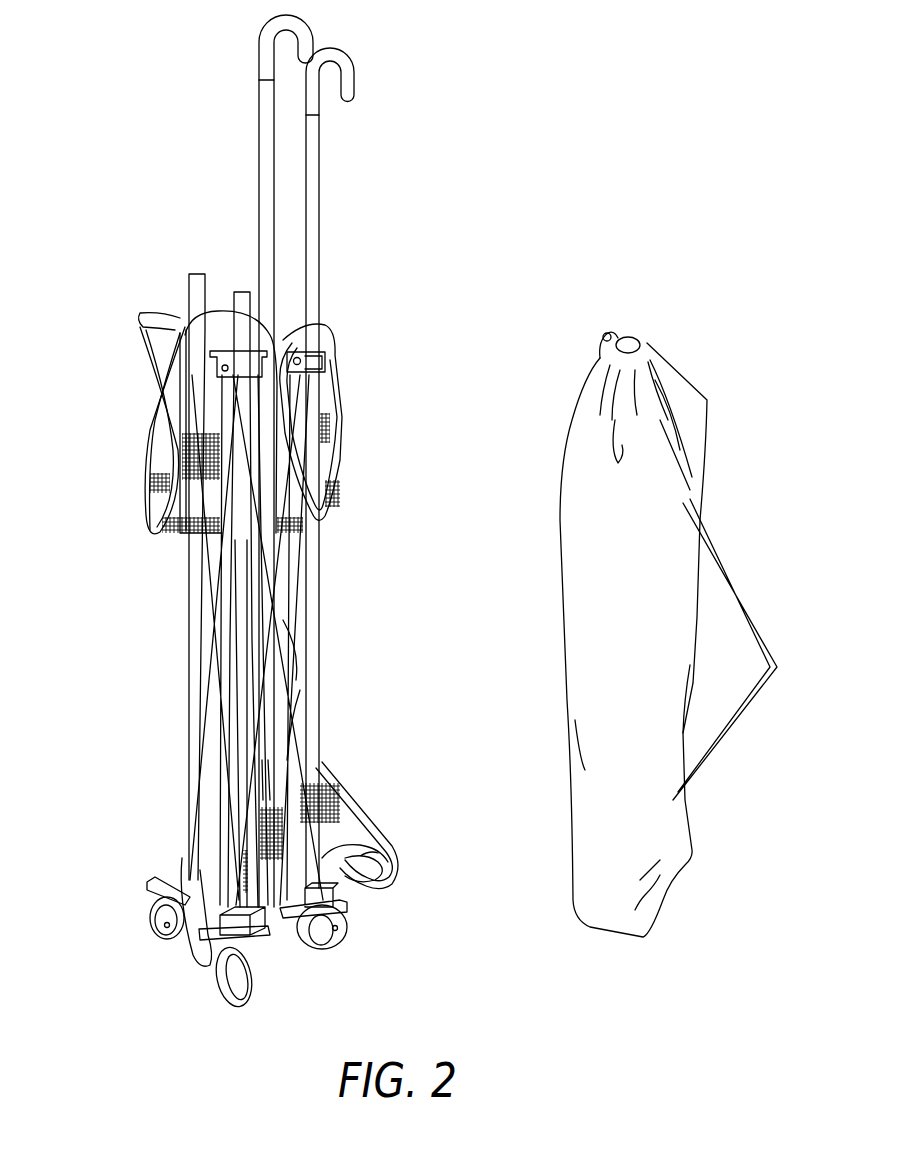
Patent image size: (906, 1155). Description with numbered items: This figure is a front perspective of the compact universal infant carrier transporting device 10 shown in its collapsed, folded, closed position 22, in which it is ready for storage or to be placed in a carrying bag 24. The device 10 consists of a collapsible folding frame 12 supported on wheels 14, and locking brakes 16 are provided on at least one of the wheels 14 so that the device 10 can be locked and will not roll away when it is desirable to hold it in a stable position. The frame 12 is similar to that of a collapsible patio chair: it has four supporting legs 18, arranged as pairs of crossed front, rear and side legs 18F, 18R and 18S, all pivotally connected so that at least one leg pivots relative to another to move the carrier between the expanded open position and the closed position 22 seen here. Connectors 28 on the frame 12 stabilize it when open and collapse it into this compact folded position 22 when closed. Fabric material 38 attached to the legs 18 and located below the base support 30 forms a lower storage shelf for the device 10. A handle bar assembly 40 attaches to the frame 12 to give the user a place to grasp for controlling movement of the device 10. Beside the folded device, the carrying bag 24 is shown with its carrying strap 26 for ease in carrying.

The compact universal infant carrier transporting device 10 is at (455, 220).
The collapsible folding frame 12 is at (282, 695).
The wheels 14 is at (150, 914).
The locking brakes 16 is at (153, 876).
The supporting legs 18 is at (240, 657).
The front legs 18F is at (212, 750).
The rear legs 18R is at (290, 643).
The side legs 18S is at (287, 759).
The collapsed, folded, closed position 22 is at (410, 434).
The carrying bag 24 is at (583, 577).
The carrying strap 26 is at (735, 587).
The connectors 28 is at (227, 347).
The base support 30 is at (198, 397).
The fabric material 38 is at (340, 868).
The handle bar assembly 40 is at (263, 173).